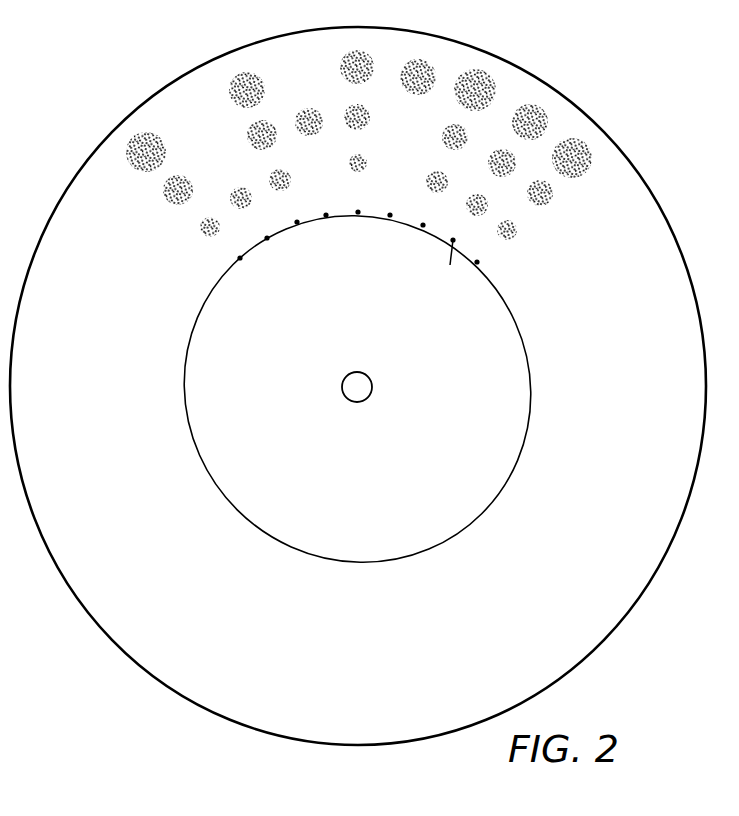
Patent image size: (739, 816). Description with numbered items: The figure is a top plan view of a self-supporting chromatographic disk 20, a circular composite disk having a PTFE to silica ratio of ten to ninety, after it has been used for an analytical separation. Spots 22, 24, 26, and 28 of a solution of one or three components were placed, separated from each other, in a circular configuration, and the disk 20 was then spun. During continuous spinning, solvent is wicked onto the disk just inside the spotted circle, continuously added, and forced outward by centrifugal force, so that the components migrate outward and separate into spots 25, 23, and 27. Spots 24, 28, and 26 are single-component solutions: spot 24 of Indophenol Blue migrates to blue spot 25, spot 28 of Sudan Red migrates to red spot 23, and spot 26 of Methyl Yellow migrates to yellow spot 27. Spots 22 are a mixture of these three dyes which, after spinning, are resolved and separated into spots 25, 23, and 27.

The self-supporting chromatographic disk 20 is at (76, 168).
The spot of a three-component solution 22 is at (477, 262).
The Sudan Red spot 23 is at (318, 92).
The Indophenol Blue solution spot 24 is at (267, 238).
The Indophenol Blue spot 25 is at (239, 193).
The Methyl Yellow solution spot 26 is at (390, 215).
The Methyl Yellow spot 27 is at (421, 62).
The Sudan Red solution spot 28 is at (326, 215).